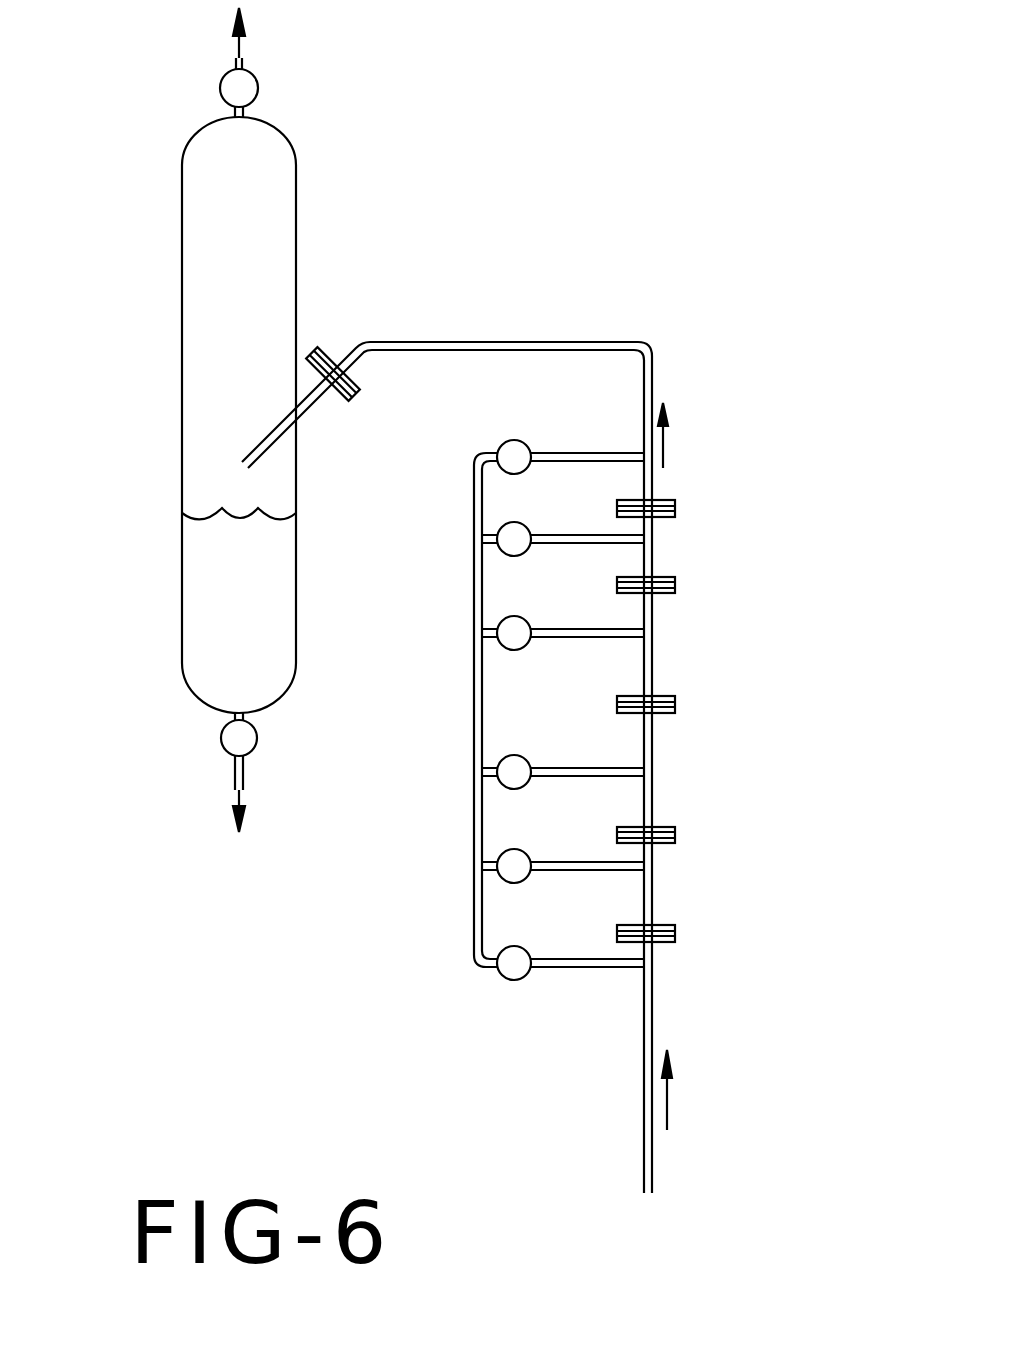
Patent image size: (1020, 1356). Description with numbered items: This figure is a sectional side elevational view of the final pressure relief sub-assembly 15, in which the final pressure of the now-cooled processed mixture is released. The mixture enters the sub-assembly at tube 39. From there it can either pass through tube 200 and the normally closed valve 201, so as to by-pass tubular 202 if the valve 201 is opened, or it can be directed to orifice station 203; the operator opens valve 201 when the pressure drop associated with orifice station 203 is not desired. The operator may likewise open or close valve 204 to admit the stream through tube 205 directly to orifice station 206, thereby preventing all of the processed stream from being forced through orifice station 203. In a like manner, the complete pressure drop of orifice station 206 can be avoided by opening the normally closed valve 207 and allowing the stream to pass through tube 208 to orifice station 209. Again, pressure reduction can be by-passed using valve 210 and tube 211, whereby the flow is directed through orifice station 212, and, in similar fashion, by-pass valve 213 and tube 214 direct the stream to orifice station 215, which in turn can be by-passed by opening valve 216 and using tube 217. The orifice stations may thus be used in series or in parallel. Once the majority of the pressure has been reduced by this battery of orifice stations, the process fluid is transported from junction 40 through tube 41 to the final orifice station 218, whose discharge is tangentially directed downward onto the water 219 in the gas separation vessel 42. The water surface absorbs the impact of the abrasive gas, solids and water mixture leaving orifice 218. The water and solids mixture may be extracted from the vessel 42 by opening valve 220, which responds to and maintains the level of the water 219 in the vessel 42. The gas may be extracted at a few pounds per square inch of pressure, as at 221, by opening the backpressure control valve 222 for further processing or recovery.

The final pressure relief sub-assembly 15 is at (281, 1024).
The tube 39 is at (645, 1010).
The junction 40 is at (653, 455).
The tube 41 is at (653, 370).
The gas separation vessel 42 is at (182, 422).
The tube 200 is at (588, 968).
The normally closed valve 201 is at (497, 968).
The tubular 202 is at (497, 955).
The orifice station 203 is at (665, 943).
The valve 204 is at (500, 880).
The tube 205 is at (590, 862).
The orifice station 206 is at (665, 843).
The normally closed valve 207 is at (500, 785).
The tube 208 is at (590, 768).
The orifice station 209 is at (660, 712).
The valve 210 is at (505, 648).
The tube 211 is at (598, 628).
The orifice station 212 is at (662, 594).
The by-pass valve 213 is at (500, 553).
The tube 214 is at (580, 535).
The orifice station 215 is at (672, 518).
The valve 216 is at (500, 475).
The tube 217 is at (597, 457).
The final orifice station 218 is at (322, 342).
The water 219 is at (210, 627).
The valve 220 is at (228, 752).
The gas outlet 221 is at (243, 217).
The backpressure control valve 222 is at (221, 85).